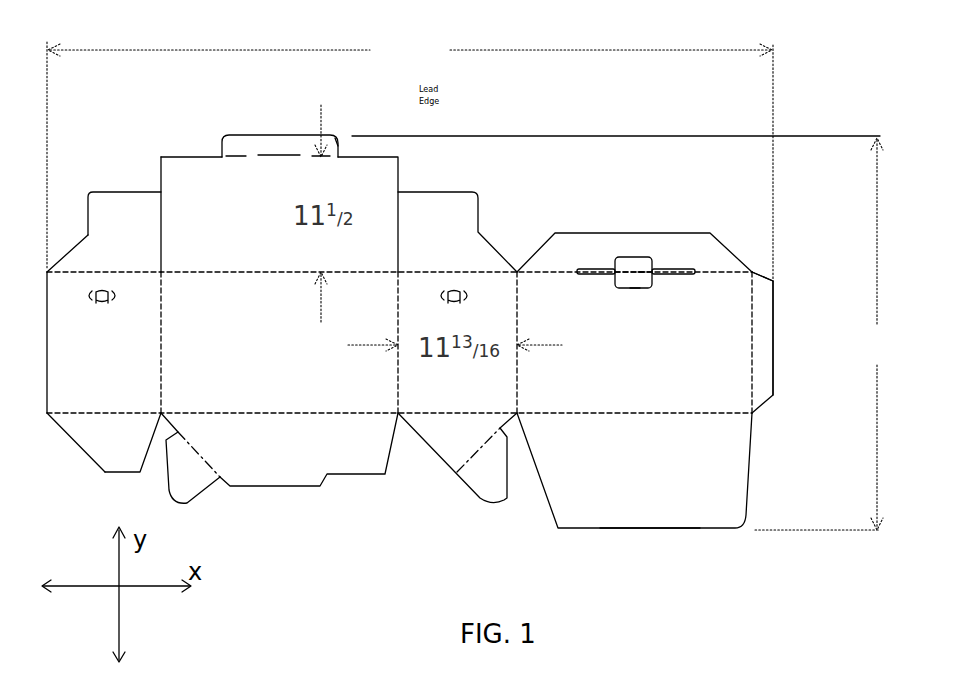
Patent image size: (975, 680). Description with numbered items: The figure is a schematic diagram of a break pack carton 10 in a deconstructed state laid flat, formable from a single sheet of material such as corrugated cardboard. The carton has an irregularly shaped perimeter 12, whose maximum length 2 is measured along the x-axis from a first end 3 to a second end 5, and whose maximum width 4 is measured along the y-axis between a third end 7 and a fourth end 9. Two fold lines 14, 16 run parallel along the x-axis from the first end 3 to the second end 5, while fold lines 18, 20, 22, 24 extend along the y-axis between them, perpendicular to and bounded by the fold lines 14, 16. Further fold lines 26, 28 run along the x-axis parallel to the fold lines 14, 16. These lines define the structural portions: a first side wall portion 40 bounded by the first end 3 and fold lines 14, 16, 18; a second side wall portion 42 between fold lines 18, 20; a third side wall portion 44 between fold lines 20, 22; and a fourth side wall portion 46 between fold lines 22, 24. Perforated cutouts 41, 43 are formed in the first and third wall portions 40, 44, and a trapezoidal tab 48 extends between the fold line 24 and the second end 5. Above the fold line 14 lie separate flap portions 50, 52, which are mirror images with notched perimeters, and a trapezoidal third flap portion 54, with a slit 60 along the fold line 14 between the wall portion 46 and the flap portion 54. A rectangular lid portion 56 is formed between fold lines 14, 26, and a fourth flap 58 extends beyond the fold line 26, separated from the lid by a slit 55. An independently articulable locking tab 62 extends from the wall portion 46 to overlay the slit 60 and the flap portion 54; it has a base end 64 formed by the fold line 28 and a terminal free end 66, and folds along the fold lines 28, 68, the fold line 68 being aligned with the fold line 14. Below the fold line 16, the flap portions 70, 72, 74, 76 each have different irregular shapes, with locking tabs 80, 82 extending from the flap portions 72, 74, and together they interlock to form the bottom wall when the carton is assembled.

The maximum length 2 is at (497, 50).
The first end 3 is at (47, 345).
The maximum width 4 is at (882, 210).
The second end 5 is at (777, 308).
The third end 7 is at (628, 533).
The fourth end 9 is at (336, 135).
The break pack carton 10 is at (826, 69).
The perimeter 12 is at (142, 190).
The fold line 14 is at (73, 270).
The fold line 16 is at (100, 418).
The fold line 18 is at (165, 333).
The fold line 20 is at (398, 388).
The fold line 22 is at (517, 395).
The fold line 24 is at (753, 340).
The fold line 26 is at (235, 155).
The fold line 28 is at (638, 290).
The first side wall portion 40 is at (122, 348).
The perforated cutout 41 is at (147, 287).
The second side wall portion 42 is at (302, 353).
The perforated cutout 43 is at (492, 288).
The third side wall portion 44 is at (478, 401).
The fourth side wall portion 46 is at (658, 387).
The trapezoidal tab 48 is at (770, 282).
The first flap portion 50 is at (134, 247).
The second flap portion 52 is at (460, 257).
The third flap portion 54 is at (695, 250).
The slit 55 is at (270, 137).
The lid portion 56 is at (279, 227).
The fourth flap 58 is at (298, 142).
The slit 60 is at (603, 247).
The locking tab 62 is at (652, 262).
The base end 64 is at (610, 304).
The terminal free end 66 is at (639, 242).
The fold line 68 is at (645, 272).
The flap portion 70 is at (134, 457).
The flap portion 72 is at (302, 460).
The flap portion 74 is at (478, 451).
The flap portion 76 is at (658, 473).
The locking tab 80 is at (154, 492).
The locking tab 82 is at (461, 505).